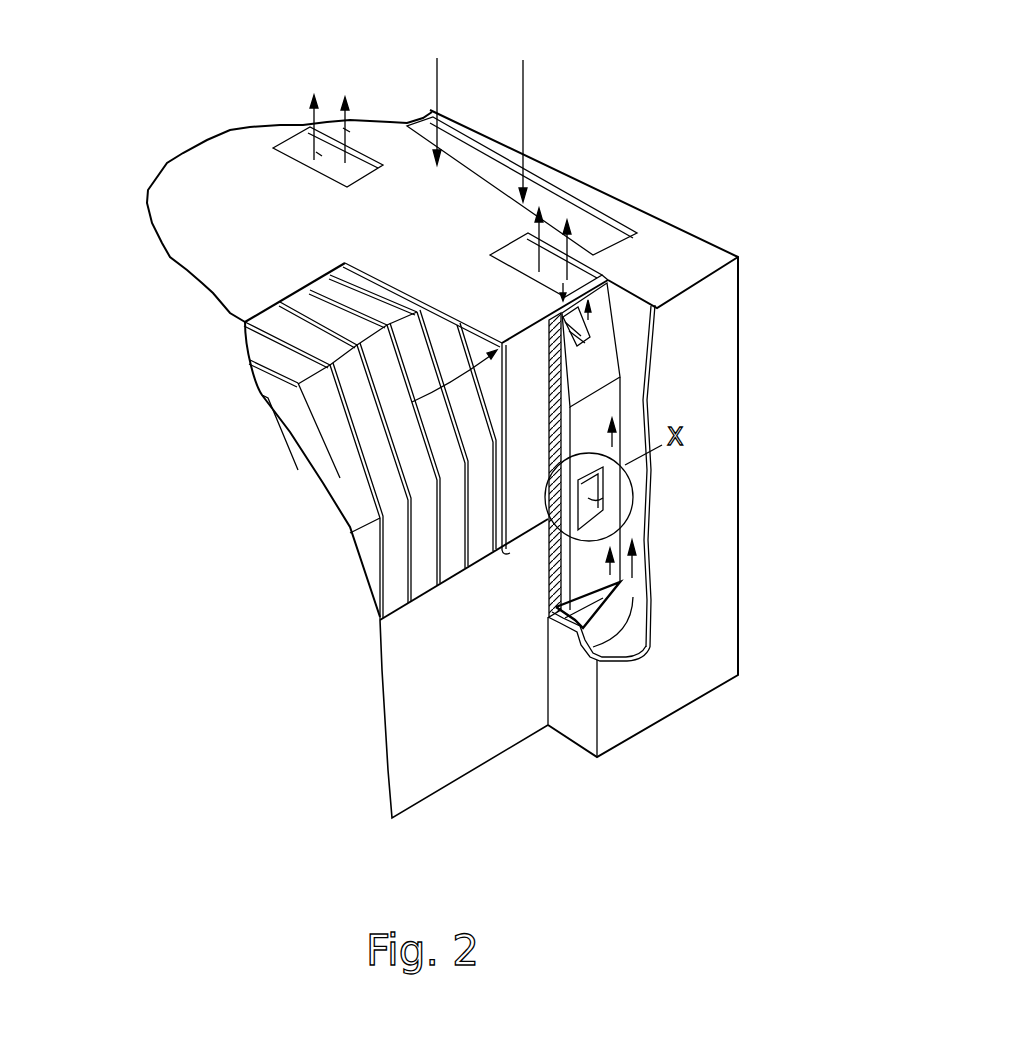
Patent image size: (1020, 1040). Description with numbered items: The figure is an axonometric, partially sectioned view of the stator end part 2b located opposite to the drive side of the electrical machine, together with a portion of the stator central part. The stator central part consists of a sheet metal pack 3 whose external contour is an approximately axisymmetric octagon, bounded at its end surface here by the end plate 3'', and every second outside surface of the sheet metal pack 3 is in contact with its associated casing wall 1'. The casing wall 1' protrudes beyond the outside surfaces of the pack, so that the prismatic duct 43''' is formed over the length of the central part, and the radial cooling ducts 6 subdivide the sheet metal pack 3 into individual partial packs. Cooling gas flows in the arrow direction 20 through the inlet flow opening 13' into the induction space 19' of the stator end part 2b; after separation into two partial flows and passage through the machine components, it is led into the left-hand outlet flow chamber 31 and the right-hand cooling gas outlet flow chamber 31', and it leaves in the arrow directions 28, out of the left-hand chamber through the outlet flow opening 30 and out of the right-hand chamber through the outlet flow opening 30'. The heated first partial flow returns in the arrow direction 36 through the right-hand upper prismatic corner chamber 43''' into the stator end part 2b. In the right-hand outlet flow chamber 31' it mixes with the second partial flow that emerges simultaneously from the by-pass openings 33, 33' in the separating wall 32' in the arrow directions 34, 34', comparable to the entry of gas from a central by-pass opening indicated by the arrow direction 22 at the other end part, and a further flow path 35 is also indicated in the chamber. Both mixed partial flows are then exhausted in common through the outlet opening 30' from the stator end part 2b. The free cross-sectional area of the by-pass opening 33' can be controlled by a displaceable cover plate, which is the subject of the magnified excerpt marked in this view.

The casing wall 1' is at (281, 211).
The stator end part 2b is at (620, 185).
The sheet metal pack 3 is at (356, 441).
The end plate 3'' is at (448, 668).
The radial cooling ducts 6 is at (403, 448).
The inlet flow opening 13' is at (522, 165).
The induction space 19' is at (556, 220).
The arrow direction 20 is at (522, 93).
The arrow direction 22 is at (603, 437).
The arrow direction 28 is at (318, 152).
The outlet flow opening 30 is at (330, 100).
The outlet flow opening 30' is at (557, 222).
The cooling gas outlet flow chamber 31 is at (312, 112).
The cooling gas outlet flow chamber 31' is at (717, 267).
The separating wall 32' is at (701, 442).
The by-pass opening 33 is at (572, 700).
The by-pass opening 33' is at (711, 496).
The arrow direction 34 is at (720, 567).
The arrow direction 34' is at (709, 488).
The flow path 35 is at (635, 597).
The arrow direction 36 is at (580, 340).
The prismatic duct 43''' is at (355, 448).